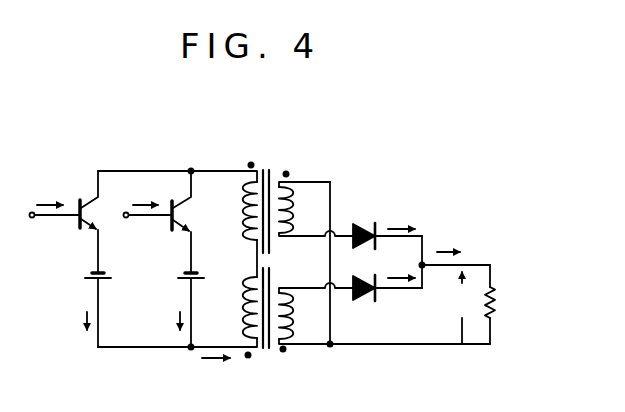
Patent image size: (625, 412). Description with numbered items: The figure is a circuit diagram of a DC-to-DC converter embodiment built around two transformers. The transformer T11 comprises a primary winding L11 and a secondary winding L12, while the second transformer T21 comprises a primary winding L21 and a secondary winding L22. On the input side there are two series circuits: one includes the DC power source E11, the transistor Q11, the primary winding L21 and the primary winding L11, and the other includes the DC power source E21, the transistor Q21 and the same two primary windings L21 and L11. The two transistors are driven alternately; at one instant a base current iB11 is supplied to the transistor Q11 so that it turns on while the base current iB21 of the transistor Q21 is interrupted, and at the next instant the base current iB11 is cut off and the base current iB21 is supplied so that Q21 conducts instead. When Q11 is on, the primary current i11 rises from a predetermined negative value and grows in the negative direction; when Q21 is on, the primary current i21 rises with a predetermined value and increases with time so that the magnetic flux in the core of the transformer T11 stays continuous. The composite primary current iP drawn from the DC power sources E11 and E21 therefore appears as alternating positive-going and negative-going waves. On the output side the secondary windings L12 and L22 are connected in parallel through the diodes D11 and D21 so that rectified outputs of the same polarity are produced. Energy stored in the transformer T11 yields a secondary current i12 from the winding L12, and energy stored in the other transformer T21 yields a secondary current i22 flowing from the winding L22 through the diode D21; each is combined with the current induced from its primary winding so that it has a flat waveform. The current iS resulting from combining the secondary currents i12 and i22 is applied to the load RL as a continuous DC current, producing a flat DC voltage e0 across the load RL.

The transistor Q21 is at (64, 222).
The transistor Q11 is at (158, 222).
The DC power source E21 is at (83, 308).
The DC power source E11 is at (177, 308).
The base current iB21 is at (51, 192).
The base current iB11 is at (142, 192).
The primary current i21 is at (72, 324).
The primary current i11 is at (165, 324).
The second transformer T21 is at (284, 189).
The transformer T11 is at (284, 328).
The primary winding L21 is at (236, 211).
The primary winding L11 is at (236, 307).
The secondary winding L22 is at (316, 209).
The secondary winding L12 is at (316, 313).
The composite primary current iP is at (216, 372).
The diode D21 is at (387, 220).
The diode D11 is at (387, 299).
The secondary current i22 is at (401, 215).
The secondary current i12 is at (401, 266).
The current iS is at (448, 239).
The load RL is at (502, 304).
The DC voltage e0 is at (460, 308).